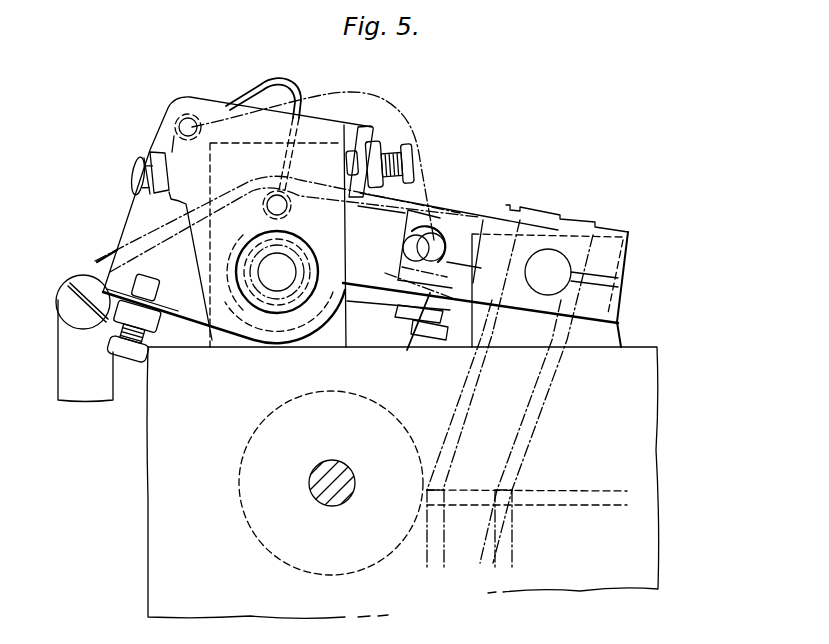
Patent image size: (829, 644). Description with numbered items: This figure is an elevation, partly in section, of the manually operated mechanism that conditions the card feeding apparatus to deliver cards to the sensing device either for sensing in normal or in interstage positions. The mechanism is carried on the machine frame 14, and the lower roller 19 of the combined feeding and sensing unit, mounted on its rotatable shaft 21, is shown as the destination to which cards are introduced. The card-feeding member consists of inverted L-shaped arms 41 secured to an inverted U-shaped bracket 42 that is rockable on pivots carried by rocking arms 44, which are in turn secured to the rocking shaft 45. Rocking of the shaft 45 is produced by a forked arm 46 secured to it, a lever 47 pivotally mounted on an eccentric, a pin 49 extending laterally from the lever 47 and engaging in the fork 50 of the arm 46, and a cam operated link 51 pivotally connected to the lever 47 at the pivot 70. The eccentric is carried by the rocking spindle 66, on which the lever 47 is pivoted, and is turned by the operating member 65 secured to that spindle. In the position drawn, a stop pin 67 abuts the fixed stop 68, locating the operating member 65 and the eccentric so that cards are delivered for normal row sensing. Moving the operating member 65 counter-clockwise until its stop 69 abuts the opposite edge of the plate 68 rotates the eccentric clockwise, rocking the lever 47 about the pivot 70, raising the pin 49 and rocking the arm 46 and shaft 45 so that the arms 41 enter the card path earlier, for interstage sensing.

The machine frame 14 is at (589, 574).
The lower roller 19 is at (244, 450).
The rotatable shaft 21 is at (330, 460).
The inverted L-shaped arm 41 is at (606, 505).
The inverted U-shaped bracket 42 is at (503, 537).
The rocking arm 44 is at (521, 477).
The rocking shaft 45 is at (543, 258).
The forked arm 46 is at (491, 243).
The lever 47 is at (404, 214).
The pin 49 is at (420, 232).
The fork 50 is at (476, 272).
The cam operated link 51 is at (108, 403).
The operating member 65 is at (325, 122).
The rocking spindle 66 is at (283, 265).
The stop pin 67 is at (407, 150).
The fixed stop 68 is at (340, 160).
The stop 69 is at (139, 164).
The pivot 70 is at (76, 278).